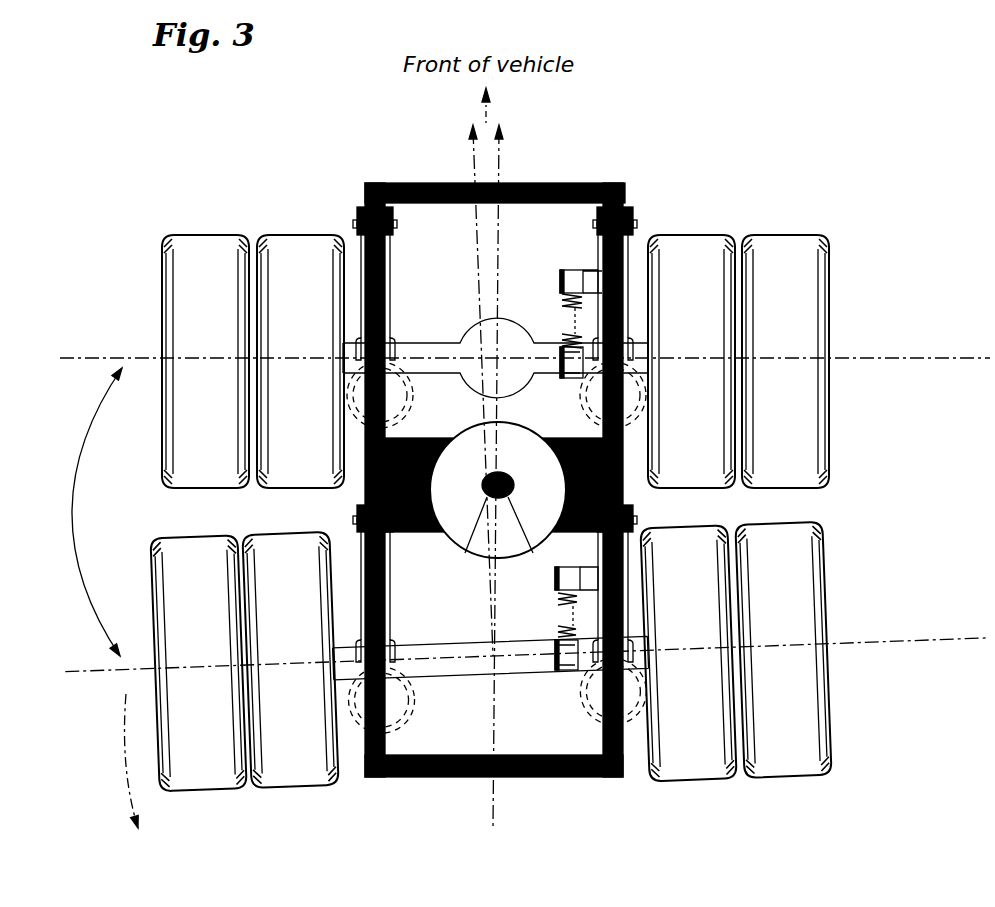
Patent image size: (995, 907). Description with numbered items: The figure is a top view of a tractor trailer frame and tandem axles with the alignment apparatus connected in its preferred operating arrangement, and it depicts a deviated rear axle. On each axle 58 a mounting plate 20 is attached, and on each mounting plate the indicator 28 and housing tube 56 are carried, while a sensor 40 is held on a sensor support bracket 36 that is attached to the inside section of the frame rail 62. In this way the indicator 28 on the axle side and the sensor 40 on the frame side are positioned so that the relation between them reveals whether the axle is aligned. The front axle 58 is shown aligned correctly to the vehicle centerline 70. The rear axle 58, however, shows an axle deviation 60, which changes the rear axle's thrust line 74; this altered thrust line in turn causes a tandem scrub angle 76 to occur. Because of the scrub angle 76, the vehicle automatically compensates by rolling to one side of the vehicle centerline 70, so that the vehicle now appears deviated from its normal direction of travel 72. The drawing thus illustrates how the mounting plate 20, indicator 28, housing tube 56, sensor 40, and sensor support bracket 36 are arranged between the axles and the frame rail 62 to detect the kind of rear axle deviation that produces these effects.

The mounting plate 20 is at (565, 378).
The indicator 28 is at (570, 327).
The sensor support bracket 36 is at (597, 270).
The sensor 40 is at (566, 278).
The housing tube 56 is at (565, 306).
The axle 58 is at (448, 373).
The axle deviation 60 is at (124, 772).
The frame rail 62 is at (625, 191).
The vehicle centerline 70 is at (501, 152).
The normal direction of travel 72 is at (488, 108).
The thrust line 74 is at (472, 156).
The tandem scrub angle 76 is at (70, 497).